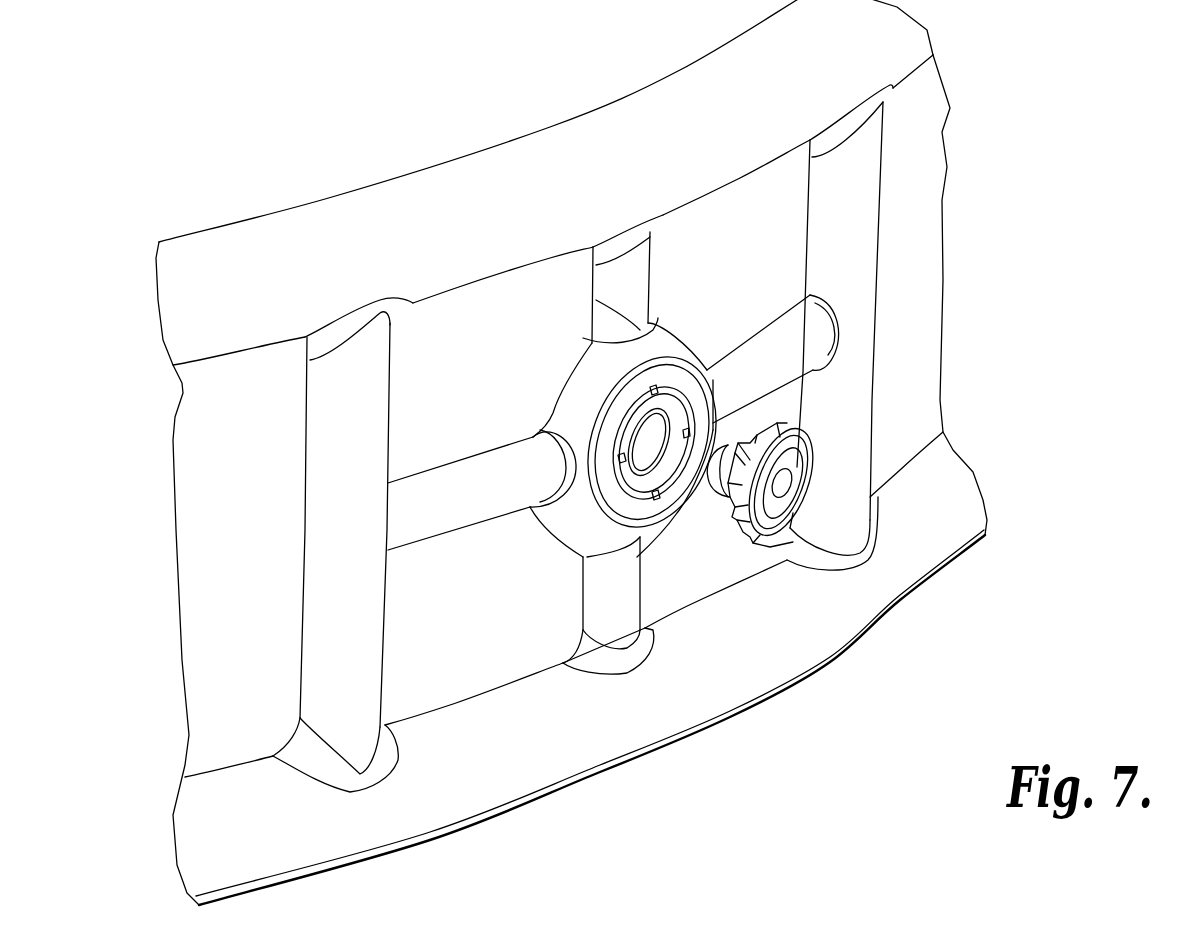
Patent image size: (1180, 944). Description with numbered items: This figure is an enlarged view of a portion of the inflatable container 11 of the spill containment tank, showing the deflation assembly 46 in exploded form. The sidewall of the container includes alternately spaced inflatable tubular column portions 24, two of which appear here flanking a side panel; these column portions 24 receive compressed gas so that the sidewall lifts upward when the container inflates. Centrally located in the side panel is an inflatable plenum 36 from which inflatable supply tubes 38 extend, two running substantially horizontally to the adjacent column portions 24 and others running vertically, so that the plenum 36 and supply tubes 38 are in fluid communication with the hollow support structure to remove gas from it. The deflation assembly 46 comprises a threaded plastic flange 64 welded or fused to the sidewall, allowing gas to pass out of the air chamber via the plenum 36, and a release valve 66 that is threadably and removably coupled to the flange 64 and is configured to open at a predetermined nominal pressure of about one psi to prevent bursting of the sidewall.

The inflatable container 11 is at (330, 194).
The tubular column portion 24 is at (338, 448).
The inflatable plenum 36 is at (588, 360).
The inflatable supply tube 38 is at (475, 475).
The deflation assembly 46 is at (700, 553).
The threaded plastic flange 64 is at (676, 390).
The release valve 66 is at (773, 523).